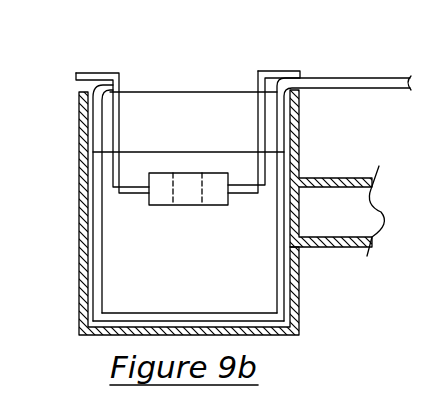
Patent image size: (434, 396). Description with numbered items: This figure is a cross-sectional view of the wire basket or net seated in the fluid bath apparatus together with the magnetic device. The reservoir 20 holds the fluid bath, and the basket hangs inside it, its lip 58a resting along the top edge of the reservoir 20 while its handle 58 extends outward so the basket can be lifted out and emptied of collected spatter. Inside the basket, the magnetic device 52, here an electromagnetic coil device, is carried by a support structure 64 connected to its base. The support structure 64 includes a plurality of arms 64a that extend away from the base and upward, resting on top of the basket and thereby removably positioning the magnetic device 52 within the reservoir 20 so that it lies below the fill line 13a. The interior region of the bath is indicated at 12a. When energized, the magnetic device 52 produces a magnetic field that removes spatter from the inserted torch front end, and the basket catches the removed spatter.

The reservoir 20 is at (79, 186).
The handle 58 is at (370, 78).
The lip 58a is at (81, 85).
The chamber 12a is at (203, 286).
The fill line 13a is at (106, 148).
The support structure 64 is at (191, 104).
The arms 64a is at (100, 72).
The magnetic device 52 is at (212, 205).